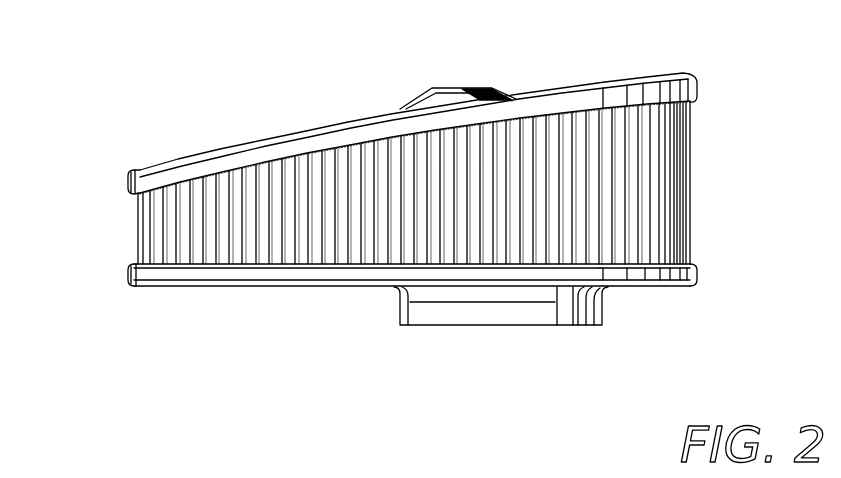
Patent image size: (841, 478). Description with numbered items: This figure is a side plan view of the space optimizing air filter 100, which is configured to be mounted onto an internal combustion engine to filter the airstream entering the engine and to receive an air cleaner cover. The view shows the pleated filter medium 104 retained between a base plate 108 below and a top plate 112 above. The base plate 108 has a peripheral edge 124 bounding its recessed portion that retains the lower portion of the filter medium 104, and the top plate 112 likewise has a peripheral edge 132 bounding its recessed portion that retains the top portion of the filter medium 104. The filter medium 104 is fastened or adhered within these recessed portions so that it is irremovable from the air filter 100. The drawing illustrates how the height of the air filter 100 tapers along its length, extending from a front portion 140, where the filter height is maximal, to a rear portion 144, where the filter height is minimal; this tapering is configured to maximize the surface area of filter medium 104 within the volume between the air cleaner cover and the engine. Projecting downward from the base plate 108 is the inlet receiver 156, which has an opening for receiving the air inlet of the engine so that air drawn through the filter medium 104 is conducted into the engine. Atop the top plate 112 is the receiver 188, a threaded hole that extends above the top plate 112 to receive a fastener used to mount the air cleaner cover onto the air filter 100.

The space optimizing air filter 100 is at (233, 68).
The filter medium 104 is at (178, 246).
The base plate 108 is at (263, 284).
The top plate 112 is at (661, 72).
The peripheral edge 124 is at (698, 270).
The peripheral edge 132 is at (128, 180).
The front portion 140 is at (715, 187).
The rear portion 144 is at (128, 228).
The inlet receiver 156 is at (580, 323).
The receiver 188 is at (451, 88).